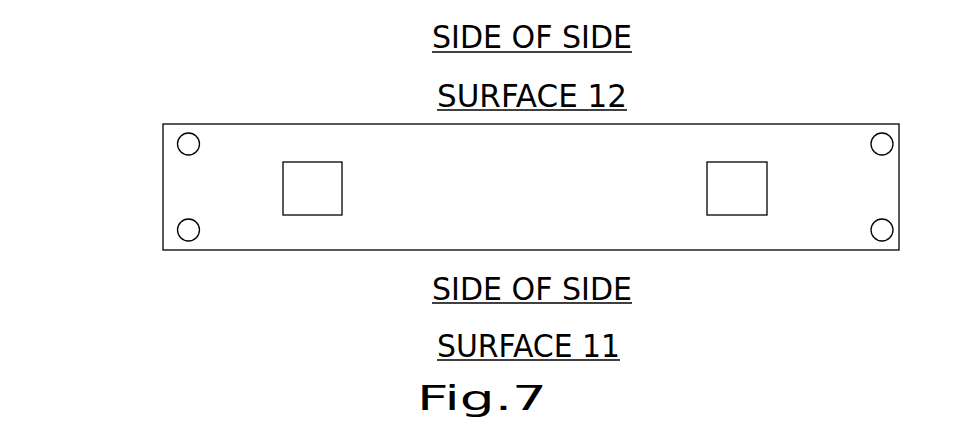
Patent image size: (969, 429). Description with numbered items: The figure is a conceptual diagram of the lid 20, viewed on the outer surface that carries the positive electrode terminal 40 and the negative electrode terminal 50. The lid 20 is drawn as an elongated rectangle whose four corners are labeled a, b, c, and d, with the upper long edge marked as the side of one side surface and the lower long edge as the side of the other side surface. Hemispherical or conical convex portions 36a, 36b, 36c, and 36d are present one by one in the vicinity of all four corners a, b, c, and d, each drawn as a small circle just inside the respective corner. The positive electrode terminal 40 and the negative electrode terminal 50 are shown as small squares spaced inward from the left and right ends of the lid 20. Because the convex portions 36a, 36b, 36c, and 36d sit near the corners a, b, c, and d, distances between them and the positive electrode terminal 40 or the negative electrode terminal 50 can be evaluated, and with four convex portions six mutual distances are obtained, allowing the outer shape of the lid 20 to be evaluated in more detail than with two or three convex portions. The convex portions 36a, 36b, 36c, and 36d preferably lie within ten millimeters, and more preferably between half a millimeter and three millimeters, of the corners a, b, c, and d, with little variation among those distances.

The lid 20 is at (63, 91).
The convex portion 36a is at (185, 133).
The convex portion 36b is at (185, 241).
The convex portion 36c is at (886, 133).
The convex portion 36d is at (886, 241).
The positive electrode terminal 40 is at (311, 178).
The negative electrode terminal 50 is at (735, 178).
The corner a is at (163, 124).
The corner b is at (163, 250).
The corner c is at (899, 124).
The corner d is at (899, 250).